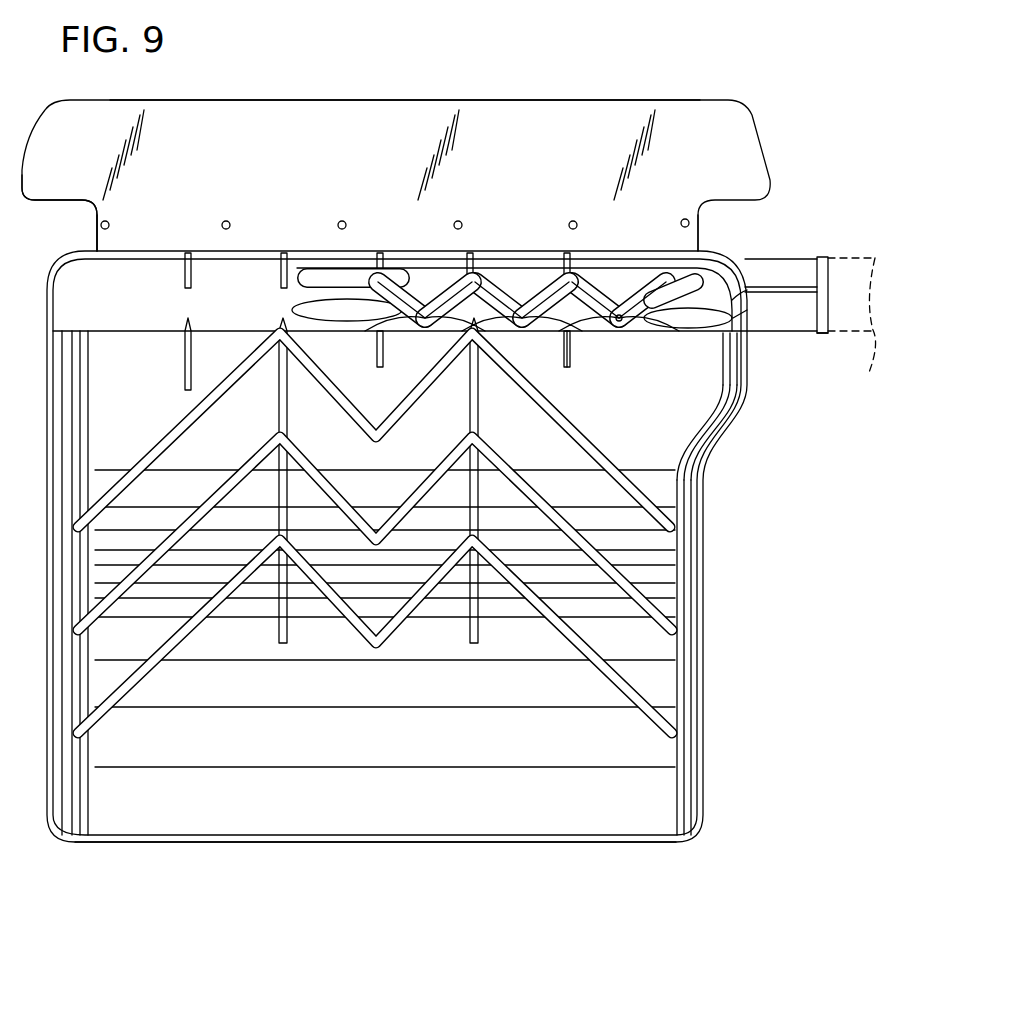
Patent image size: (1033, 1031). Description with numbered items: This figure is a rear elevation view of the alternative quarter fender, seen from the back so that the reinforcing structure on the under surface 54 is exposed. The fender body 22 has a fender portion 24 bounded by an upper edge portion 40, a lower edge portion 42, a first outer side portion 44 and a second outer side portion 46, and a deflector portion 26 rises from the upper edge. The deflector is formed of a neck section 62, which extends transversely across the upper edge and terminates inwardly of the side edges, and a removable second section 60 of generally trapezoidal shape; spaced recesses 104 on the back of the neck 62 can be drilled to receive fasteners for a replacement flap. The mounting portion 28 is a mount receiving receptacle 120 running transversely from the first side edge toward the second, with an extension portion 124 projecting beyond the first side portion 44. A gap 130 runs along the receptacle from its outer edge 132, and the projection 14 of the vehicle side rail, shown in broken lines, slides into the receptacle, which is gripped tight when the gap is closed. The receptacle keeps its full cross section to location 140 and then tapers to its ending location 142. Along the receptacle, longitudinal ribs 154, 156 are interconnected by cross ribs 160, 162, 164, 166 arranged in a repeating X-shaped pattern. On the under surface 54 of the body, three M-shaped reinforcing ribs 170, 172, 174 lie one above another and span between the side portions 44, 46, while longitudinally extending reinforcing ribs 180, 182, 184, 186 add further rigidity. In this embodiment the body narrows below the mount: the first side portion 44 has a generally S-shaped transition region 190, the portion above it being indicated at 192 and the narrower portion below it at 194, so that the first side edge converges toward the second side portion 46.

The projection 14 is at (857, 329).
The body 22 is at (412, 576).
The fender portion 24 is at (437, 533).
The deflector portion 26 is at (395, 149).
The mounting portion 28 is at (809, 276).
The upper edge portion 40 is at (78, 250).
The lower edge portion 42 is at (457, 842).
The first outer side portion 44 is at (740, 584).
The second outer side portion 46 is at (43, 568).
The under surface 54 is at (366, 690).
The second section 60 is at (333, 118).
The neck section 62 is at (262, 248).
The recesses 104 is at (222, 225).
The mount receiving receptacle 120 is at (750, 313).
The extension portion 124 is at (779, 268).
The gap 130 is at (804, 290).
The outer edge 132 is at (838, 325).
The location 140 is at (500, 281).
The ending location 142 is at (301, 285).
The rib 154 is at (512, 275).
The rib 156 is at (618, 318).
The cross rib 160 is at (378, 353).
The cross rib 162 is at (433, 327).
The cross rib 164 is at (392, 280).
The cross rib 166 is at (447, 290).
The M-shaped reinforcing rib 170 is at (405, 407).
The M-shaped reinforcing rib 172 is at (412, 505).
The M-shaped reinforcing rib 174 is at (405, 610).
The longitudinally extending reinforcing rib 180 is at (183, 362).
The longitudinally extending reinforcing rib 182 is at (287, 400).
The longitudinally extending reinforcing rib 184 is at (478, 392).
The longitudinally extending reinforcing rib 186 is at (570, 365).
The transition region 190 is at (722, 465).
The portion above the transition region 192 is at (748, 380).
The portion below the transition region 194 is at (703, 522).